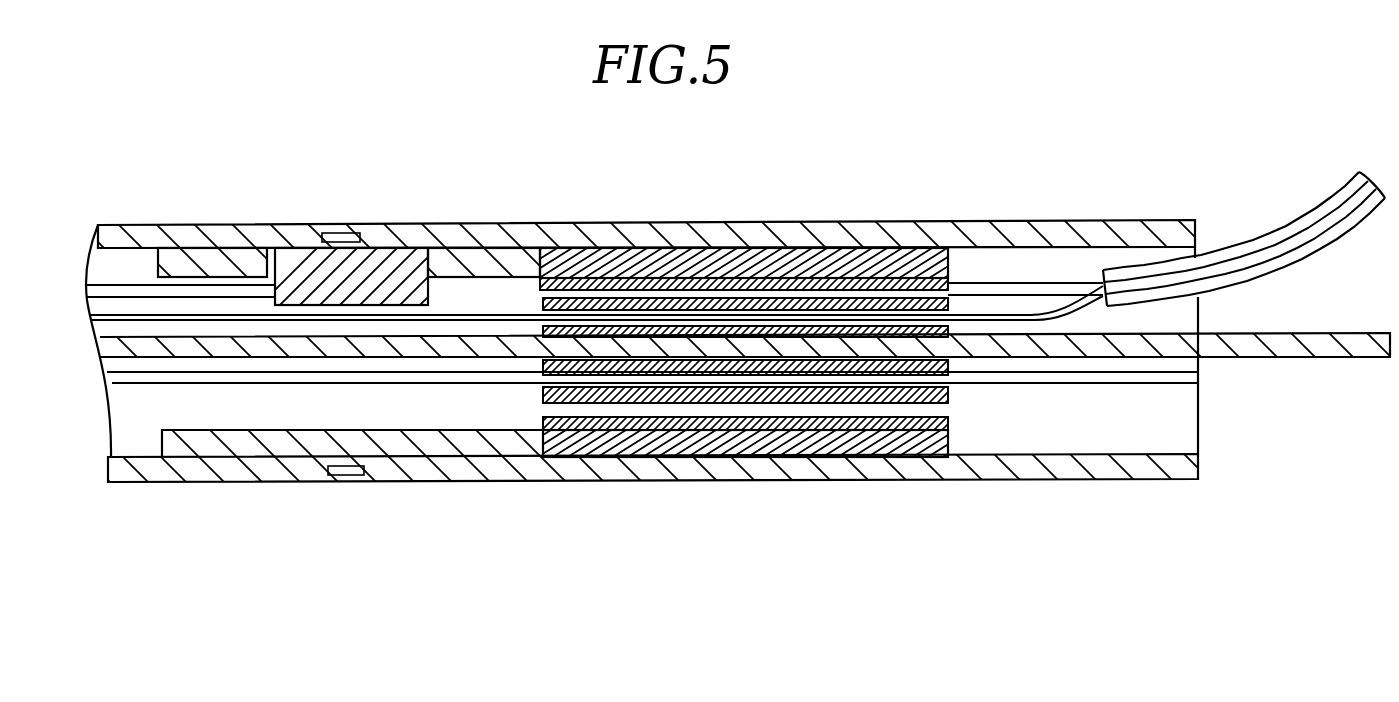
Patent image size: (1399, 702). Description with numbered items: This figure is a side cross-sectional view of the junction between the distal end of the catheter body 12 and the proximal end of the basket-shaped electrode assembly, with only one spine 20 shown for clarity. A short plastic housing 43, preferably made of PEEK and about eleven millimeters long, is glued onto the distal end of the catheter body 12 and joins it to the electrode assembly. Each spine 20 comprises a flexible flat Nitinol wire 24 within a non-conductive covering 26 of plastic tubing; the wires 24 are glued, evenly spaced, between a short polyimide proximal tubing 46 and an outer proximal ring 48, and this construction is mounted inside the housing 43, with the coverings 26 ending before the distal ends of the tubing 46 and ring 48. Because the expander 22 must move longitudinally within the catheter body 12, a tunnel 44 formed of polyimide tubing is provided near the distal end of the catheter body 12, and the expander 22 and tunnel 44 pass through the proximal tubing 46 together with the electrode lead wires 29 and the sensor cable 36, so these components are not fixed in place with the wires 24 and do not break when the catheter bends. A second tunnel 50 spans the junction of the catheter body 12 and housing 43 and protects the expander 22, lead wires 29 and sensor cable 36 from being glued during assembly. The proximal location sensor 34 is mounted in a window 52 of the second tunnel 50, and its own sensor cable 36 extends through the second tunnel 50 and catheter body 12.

The catheter body 12 is at (212, 242).
The spine 20 is at (1227, 247).
The expander 22 is at (1027, 348).
The flexible wire 24 is at (976, 293).
The non-conductive covering 26 is at (1297, 213).
The electrode lead wire 29 is at (250, 307).
The proximal location sensor 34 is at (380, 277).
The sensor cable 36 is at (127, 283).
The plastic housing 43 is at (466, 455).
The tunnel 44 is at (863, 380).
The proximal tubing 46 is at (596, 305).
The outer proximal ring 48 is at (692, 290).
The second tunnel 50 is at (480, 264).
The window 52 is at (438, 267).